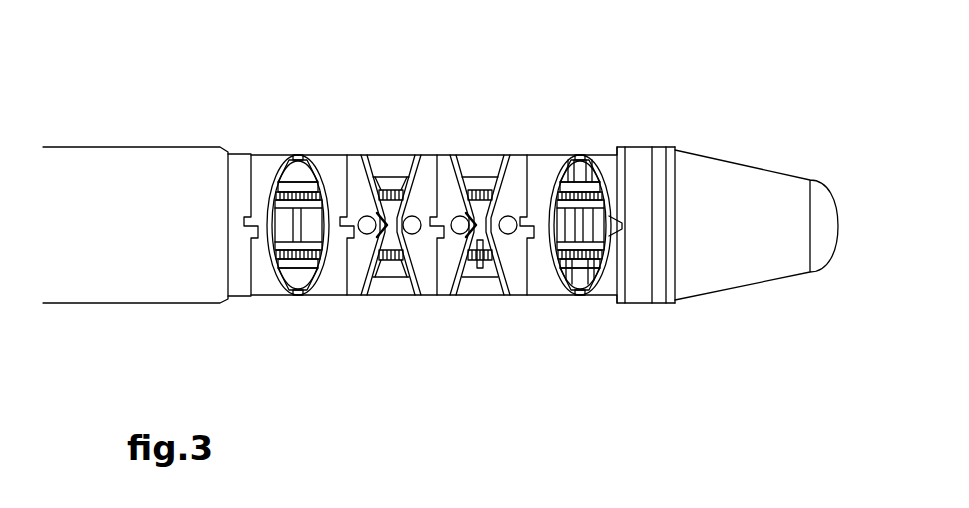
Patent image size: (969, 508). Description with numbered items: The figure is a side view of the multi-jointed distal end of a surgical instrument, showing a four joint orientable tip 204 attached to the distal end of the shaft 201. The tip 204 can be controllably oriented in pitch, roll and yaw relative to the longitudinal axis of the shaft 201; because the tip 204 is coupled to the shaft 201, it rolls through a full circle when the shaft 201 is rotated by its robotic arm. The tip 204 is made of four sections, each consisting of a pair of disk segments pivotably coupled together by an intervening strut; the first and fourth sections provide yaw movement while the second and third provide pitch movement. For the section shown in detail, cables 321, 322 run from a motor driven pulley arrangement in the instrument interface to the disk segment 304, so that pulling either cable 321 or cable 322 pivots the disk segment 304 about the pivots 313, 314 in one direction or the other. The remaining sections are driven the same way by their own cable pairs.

The shaft 201 is at (72, 147).
The orientable tip 204 is at (541, 230).
The disk segment 304 is at (429, 290).
The pivot 313 is at (364, 205).
The pivot 314 is at (415, 200).
The cable 321 is at (391, 275).
The cable 322 is at (386, 150).